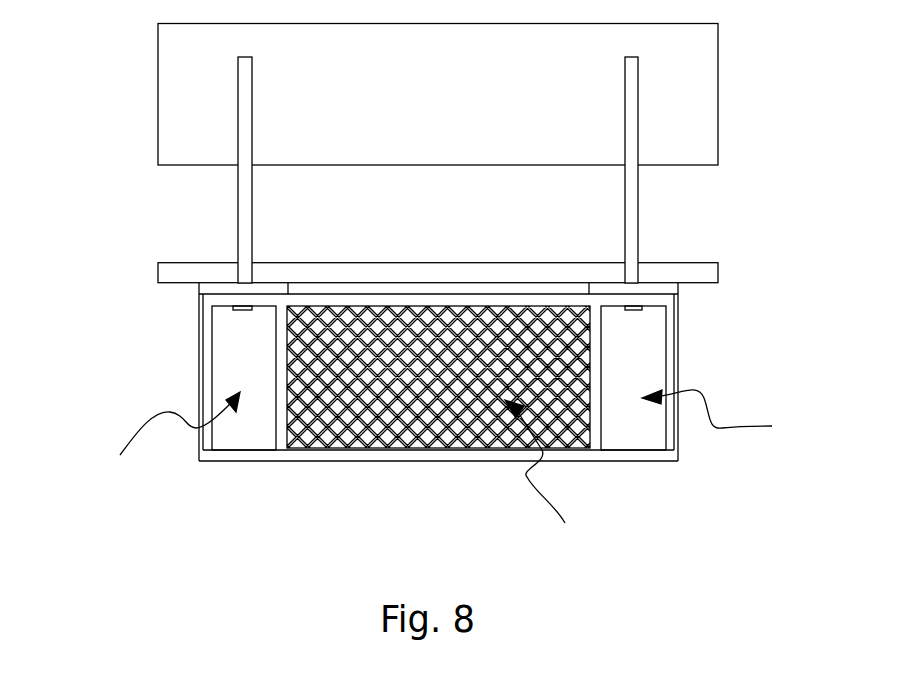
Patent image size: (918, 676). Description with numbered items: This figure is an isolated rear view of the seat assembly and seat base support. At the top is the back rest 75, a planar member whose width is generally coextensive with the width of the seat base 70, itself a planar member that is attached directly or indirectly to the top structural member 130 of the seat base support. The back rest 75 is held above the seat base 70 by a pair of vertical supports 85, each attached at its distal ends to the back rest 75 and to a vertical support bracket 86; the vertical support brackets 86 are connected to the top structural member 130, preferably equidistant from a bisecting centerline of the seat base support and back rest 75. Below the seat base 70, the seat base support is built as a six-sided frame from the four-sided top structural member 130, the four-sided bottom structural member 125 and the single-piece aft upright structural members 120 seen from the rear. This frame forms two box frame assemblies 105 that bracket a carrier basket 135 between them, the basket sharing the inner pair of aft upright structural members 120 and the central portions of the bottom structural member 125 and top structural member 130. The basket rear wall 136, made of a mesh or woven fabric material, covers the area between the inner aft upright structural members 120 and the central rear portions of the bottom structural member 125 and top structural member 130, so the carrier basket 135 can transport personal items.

The seat base 70 is at (323, 262).
The back rest 75 is at (158, 75).
The vertical support 85 is at (238, 190).
The vertical support bracket 86 is at (207, 289).
The box frame assembly 105 is at (446, 438).
The aft upright structural member 120 is at (200, 328).
The bottom structural member 125 is at (385, 463).
The top structural member 130 is at (428, 302).
The carrier basket 135 is at (552, 483).
The basket rear wall 136 is at (326, 406).